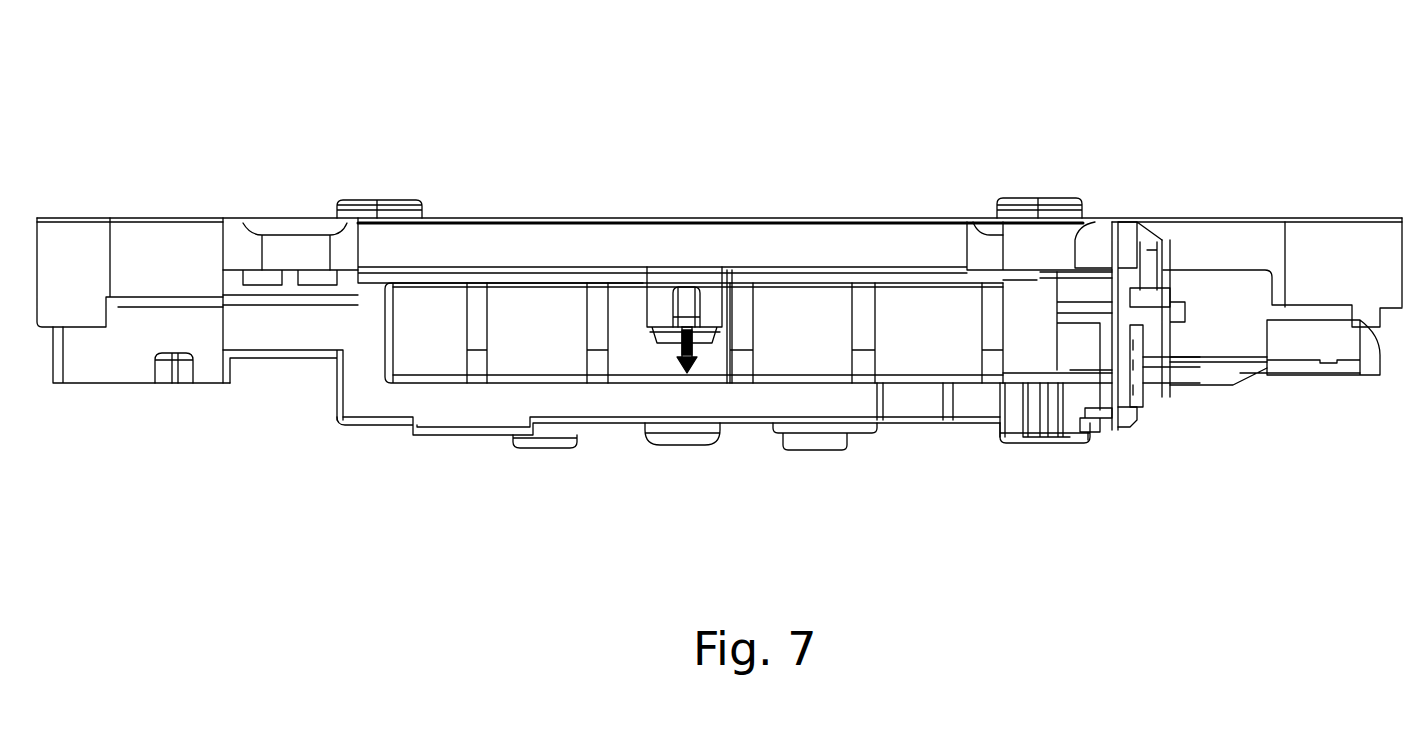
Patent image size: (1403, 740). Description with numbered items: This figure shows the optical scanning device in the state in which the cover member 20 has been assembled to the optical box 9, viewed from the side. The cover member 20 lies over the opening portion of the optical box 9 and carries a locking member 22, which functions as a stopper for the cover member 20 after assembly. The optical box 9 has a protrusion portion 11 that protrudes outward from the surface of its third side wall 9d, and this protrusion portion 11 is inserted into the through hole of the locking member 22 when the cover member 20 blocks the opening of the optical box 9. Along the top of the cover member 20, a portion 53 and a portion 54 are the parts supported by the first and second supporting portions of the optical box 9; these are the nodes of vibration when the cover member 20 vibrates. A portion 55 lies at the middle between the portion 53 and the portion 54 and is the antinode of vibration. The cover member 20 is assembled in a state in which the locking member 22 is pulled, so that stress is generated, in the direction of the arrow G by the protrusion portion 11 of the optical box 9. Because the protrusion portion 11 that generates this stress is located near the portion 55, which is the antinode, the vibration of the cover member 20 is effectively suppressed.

The cover member 20 is at (157, 230).
The portion 54 is at (345, 218).
The portion 55 is at (653, 217).
The portion 53 is at (957, 222).
The locking member 22 is at (710, 287).
The protrusion portion 11 is at (688, 307).
The third side wall 9d is at (635, 332).
The optical box 9 is at (933, 363).
The arrow G is at (688, 375).